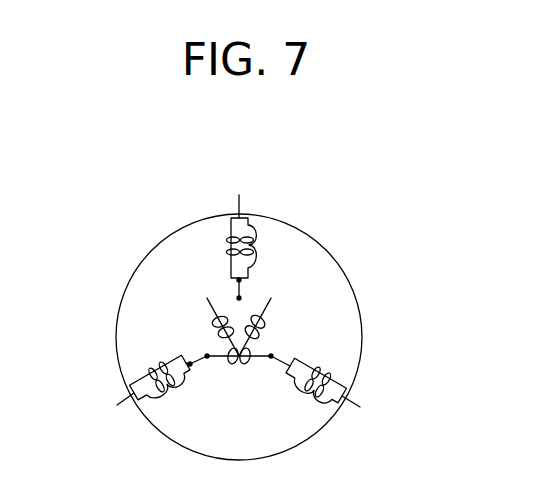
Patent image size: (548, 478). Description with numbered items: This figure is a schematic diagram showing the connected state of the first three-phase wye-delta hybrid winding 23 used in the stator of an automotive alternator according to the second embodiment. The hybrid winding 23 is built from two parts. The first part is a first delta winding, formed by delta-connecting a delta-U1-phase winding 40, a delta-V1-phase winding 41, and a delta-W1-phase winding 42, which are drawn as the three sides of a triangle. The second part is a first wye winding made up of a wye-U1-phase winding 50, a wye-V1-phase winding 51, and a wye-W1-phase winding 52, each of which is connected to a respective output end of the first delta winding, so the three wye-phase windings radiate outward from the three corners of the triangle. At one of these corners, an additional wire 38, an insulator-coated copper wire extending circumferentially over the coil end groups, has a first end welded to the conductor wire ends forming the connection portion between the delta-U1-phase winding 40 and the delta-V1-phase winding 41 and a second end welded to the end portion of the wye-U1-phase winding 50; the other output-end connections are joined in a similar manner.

The first three-phase wye-delta hybrid winding 23 is at (164, 234).
The additional wire 38 is at (242, 290).
The delta-U1-phase winding 40 is at (215, 323).
The delta-V1-phase winding 41 is at (263, 323).
The delta-W1-phase winding 42 is at (238, 368).
The wye-U1-phase winding 50 is at (263, 240).
The wye-V1-phase winding 51 is at (332, 364).
The wye-W1-phase winding 52 is at (146, 364).